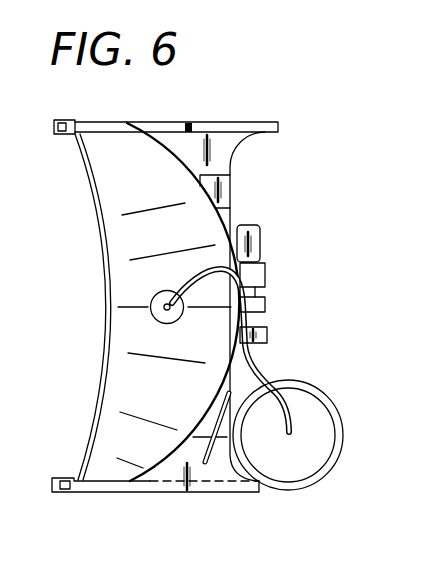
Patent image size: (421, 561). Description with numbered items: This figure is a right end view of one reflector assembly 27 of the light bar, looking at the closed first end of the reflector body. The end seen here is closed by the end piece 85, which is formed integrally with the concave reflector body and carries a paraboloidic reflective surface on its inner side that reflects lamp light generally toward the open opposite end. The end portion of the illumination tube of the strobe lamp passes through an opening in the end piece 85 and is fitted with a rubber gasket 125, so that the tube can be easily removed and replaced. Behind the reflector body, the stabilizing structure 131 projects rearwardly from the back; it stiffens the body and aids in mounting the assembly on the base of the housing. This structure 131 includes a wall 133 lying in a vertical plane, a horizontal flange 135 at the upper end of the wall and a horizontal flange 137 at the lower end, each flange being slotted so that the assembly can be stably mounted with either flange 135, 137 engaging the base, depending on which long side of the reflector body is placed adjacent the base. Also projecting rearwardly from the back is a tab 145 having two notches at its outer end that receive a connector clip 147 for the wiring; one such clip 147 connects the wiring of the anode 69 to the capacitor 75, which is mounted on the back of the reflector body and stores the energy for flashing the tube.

The reflector assembly 27 is at (125, 503).
The anode 69 is at (152, 297).
The capacitor 75 is at (326, 386).
The end piece 85 is at (120, 372).
The rubber gasket 125 is at (150, 318).
The stabilizing structure 131 is at (240, 200).
The wall 133 is at (224, 163).
The horizontal flange 135 is at (249, 122).
The horizontal flange 137 is at (219, 493).
The tab 145 is at (268, 331).
The connector clip 147 is at (267, 288).